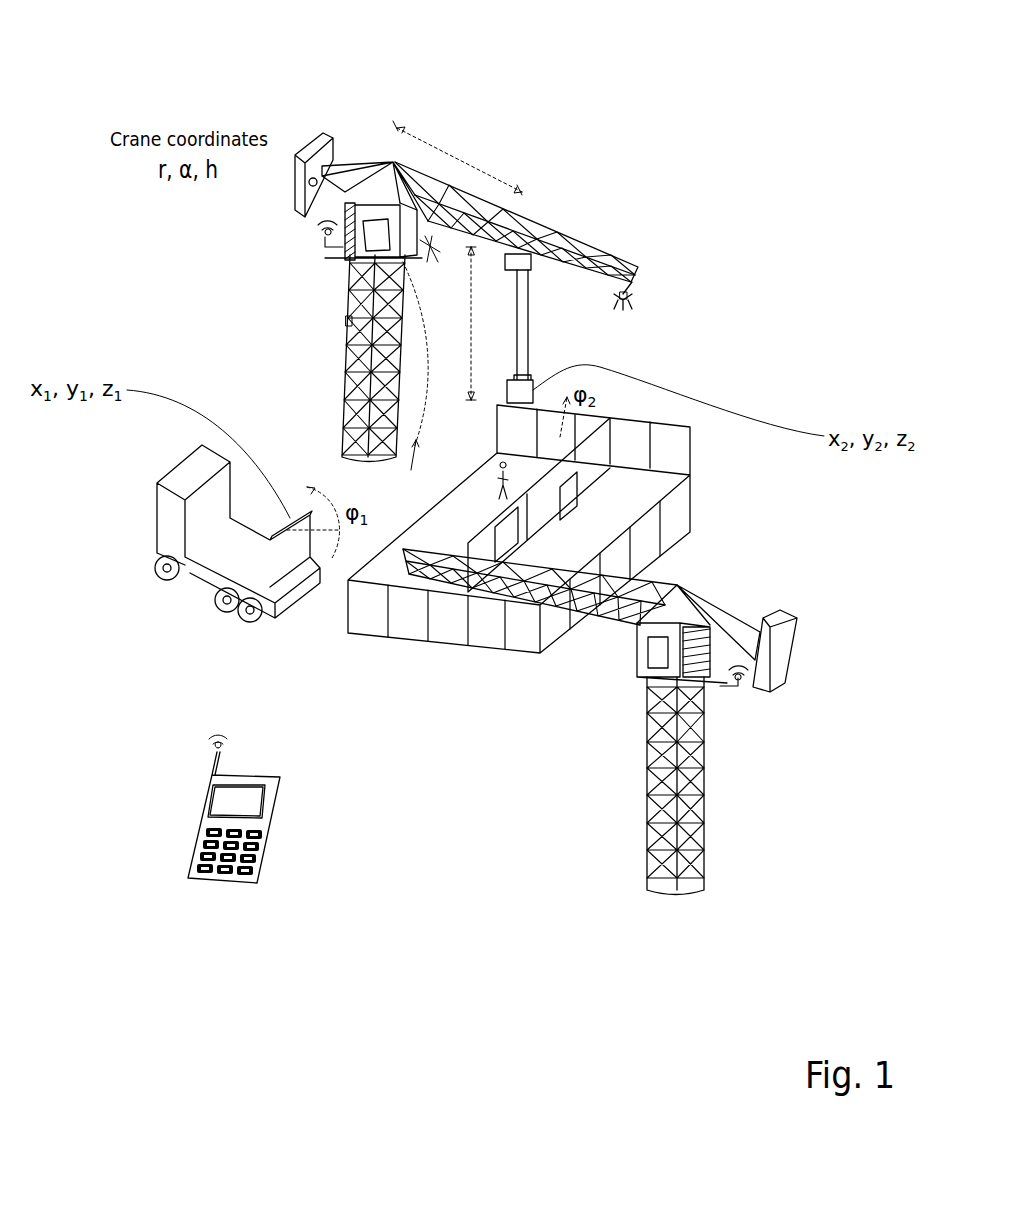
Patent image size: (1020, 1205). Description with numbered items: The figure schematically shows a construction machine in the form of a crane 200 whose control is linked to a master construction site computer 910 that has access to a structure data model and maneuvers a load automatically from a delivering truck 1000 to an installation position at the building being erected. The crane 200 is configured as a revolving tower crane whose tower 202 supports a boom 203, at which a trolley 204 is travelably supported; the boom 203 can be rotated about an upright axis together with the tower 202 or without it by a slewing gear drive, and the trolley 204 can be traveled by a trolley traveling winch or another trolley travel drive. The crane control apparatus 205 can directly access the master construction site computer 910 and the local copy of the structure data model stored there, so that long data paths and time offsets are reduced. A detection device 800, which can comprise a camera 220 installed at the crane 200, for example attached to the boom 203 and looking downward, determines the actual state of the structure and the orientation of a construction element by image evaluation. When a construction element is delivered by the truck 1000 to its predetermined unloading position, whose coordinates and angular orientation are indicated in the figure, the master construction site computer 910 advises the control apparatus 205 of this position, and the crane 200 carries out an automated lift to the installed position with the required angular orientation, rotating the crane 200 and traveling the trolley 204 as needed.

The crane 200 is at (557, 192).
The tower 202 is at (350, 353).
The boom 203 is at (575, 245).
The trolley 204 is at (530, 258).
The crane control apparatus 205 is at (350, 258).
The camera 220 is at (350, 322).
The detection device 800 is at (633, 290).
The master construction site computer 910 is at (198, 813).
The truck 1000 is at (153, 470).